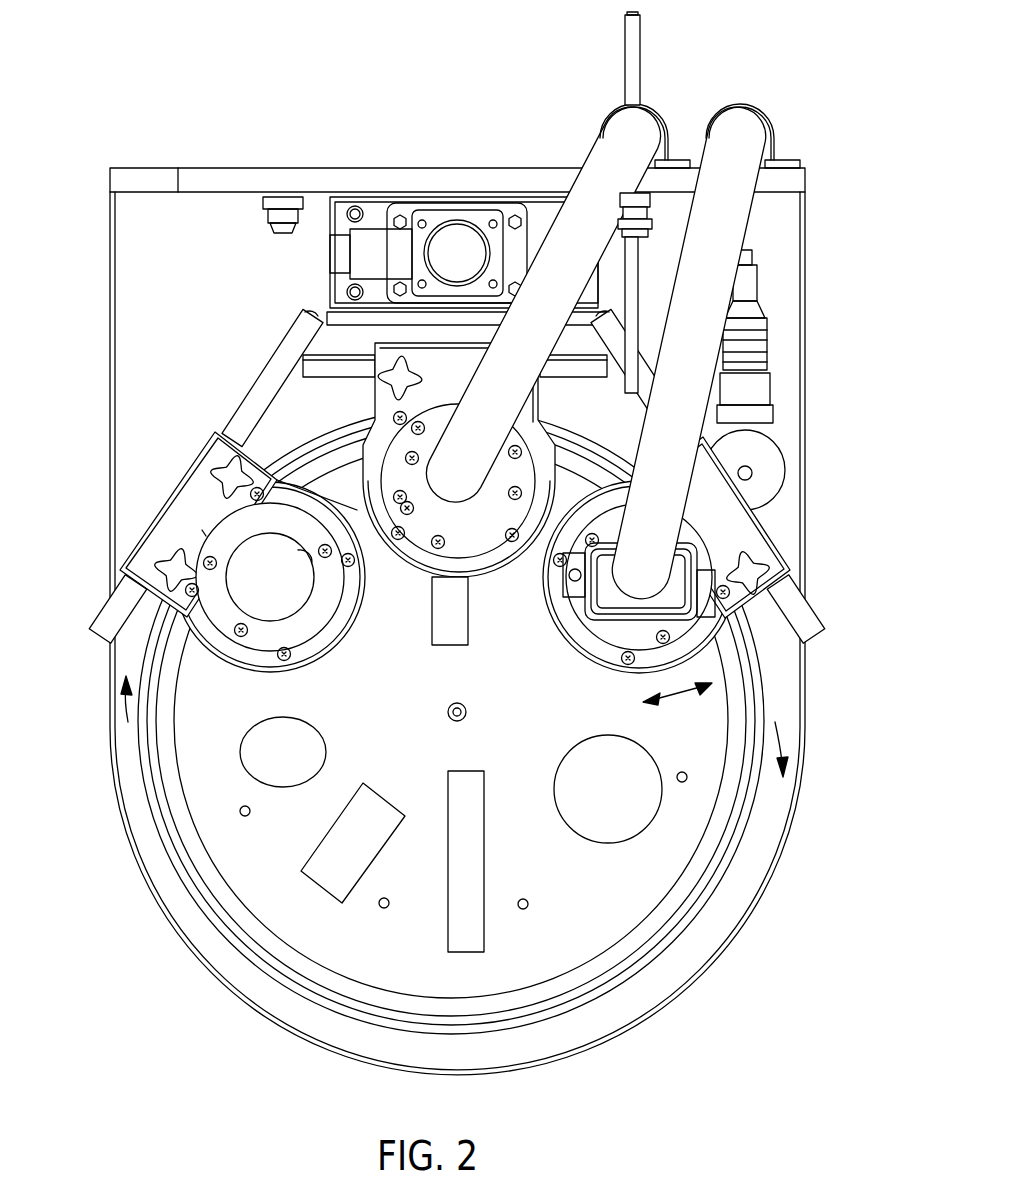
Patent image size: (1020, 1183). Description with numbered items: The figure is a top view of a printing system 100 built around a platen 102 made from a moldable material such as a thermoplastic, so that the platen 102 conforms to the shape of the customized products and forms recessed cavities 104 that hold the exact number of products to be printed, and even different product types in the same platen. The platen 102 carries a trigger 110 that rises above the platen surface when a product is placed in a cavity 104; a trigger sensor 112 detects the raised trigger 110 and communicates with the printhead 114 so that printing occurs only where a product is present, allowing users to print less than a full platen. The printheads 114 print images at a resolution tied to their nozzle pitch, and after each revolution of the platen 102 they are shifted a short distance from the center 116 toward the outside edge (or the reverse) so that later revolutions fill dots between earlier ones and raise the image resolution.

The printing system 100 is at (136, 36).
The platen 102 is at (539, 694).
The recessed cavities 104 is at (263, 743).
The trigger 110 is at (240, 813).
The trigger sensor 112 is at (168, 533).
The printhead 114 is at (393, 405).
The center 116 is at (446, 711).